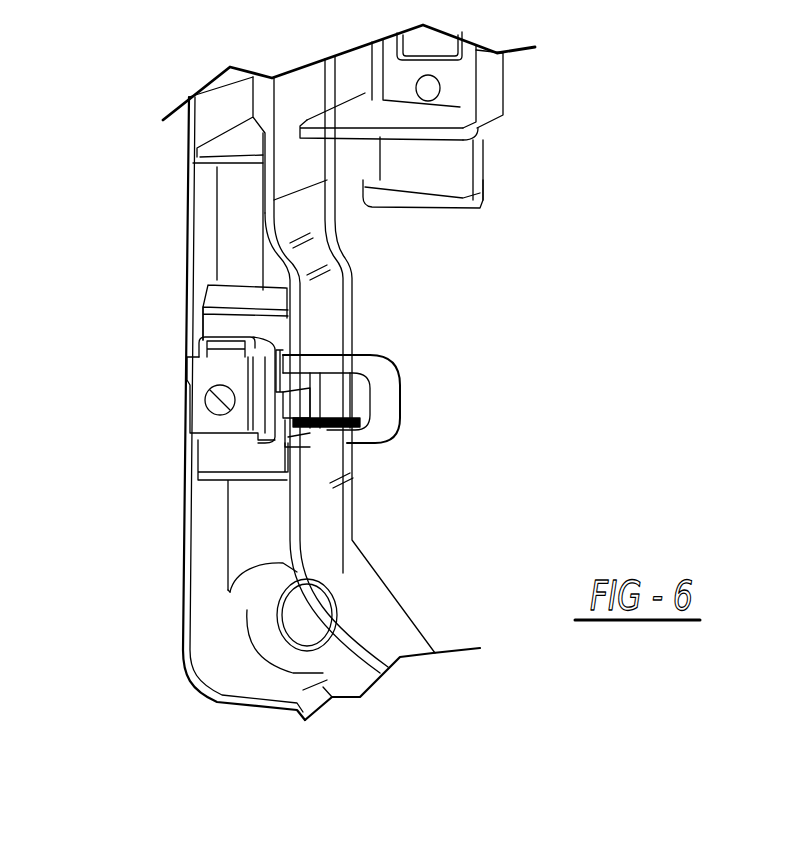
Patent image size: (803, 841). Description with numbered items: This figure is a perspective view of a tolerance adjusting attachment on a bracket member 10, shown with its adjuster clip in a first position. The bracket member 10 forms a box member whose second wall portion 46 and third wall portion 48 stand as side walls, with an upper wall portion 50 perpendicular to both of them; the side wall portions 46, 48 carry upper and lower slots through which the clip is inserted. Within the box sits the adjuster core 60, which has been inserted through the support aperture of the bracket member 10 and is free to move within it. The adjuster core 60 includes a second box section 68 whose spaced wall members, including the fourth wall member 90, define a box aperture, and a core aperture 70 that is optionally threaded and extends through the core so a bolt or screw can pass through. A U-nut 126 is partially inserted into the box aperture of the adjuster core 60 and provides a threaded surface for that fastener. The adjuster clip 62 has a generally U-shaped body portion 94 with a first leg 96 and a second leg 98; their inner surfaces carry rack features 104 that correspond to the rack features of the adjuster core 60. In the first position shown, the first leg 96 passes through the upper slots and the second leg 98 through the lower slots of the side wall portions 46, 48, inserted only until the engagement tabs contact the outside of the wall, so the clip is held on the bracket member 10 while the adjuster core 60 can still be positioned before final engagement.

The bracket member 10 is at (317, 208).
The second wall portion 46 is at (197, 327).
The third wall portion 48 is at (310, 327).
The upper wall portion 50 is at (257, 293).
The adjuster core 60 is at (152, 343).
The adjuster clip 62 is at (415, 417).
The second box section 68 is at (161, 463).
The core aperture 70 is at (220, 403).
The fourth wall member 90 is at (268, 445).
The U-shaped body portion 94 is at (385, 400).
The first leg 96 is at (353, 355).
The second leg 98 is at (332, 427).
The rack features 104 is at (313, 426).
The U-nut 126 is at (215, 370).